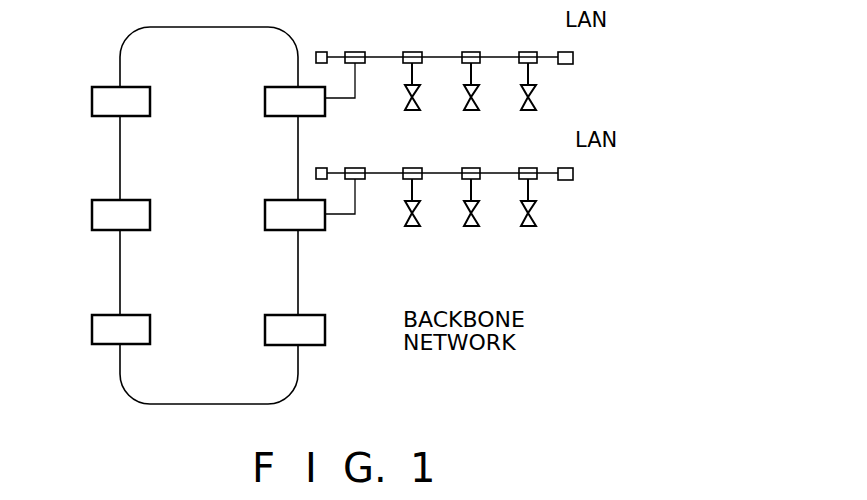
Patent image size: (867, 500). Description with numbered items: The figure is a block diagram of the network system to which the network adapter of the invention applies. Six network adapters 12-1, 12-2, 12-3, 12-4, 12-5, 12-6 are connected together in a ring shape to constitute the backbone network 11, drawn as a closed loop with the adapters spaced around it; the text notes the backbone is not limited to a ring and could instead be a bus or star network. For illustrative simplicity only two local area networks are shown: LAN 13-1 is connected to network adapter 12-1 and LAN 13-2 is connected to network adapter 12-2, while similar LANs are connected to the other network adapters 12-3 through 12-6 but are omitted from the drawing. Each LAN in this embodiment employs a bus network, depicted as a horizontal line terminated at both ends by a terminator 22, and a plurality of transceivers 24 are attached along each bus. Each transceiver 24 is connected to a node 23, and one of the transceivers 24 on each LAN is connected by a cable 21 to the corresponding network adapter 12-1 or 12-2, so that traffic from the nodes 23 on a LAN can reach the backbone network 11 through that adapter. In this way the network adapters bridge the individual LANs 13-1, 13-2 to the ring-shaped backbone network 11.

The backbone network 11 is at (298, 289).
The network adapter 12-1 is at (270, 103).
The network adapter 12-2 is at (270, 218).
The network adapter 12-3 is at (272, 334).
The network adapter 12-4 is at (96, 103).
The network adapter 12-5 is at (96, 218).
The network adapter 12-6 is at (96, 333).
The LAN 13-1 is at (479, 52).
The LAN 13-2 is at (442, 150).
The transmission cable 21 is at (377, 60).
The terminator 22 is at (565, 66).
The node 23 is at (462, 96).
The transceiver 24 is at (410, 52).